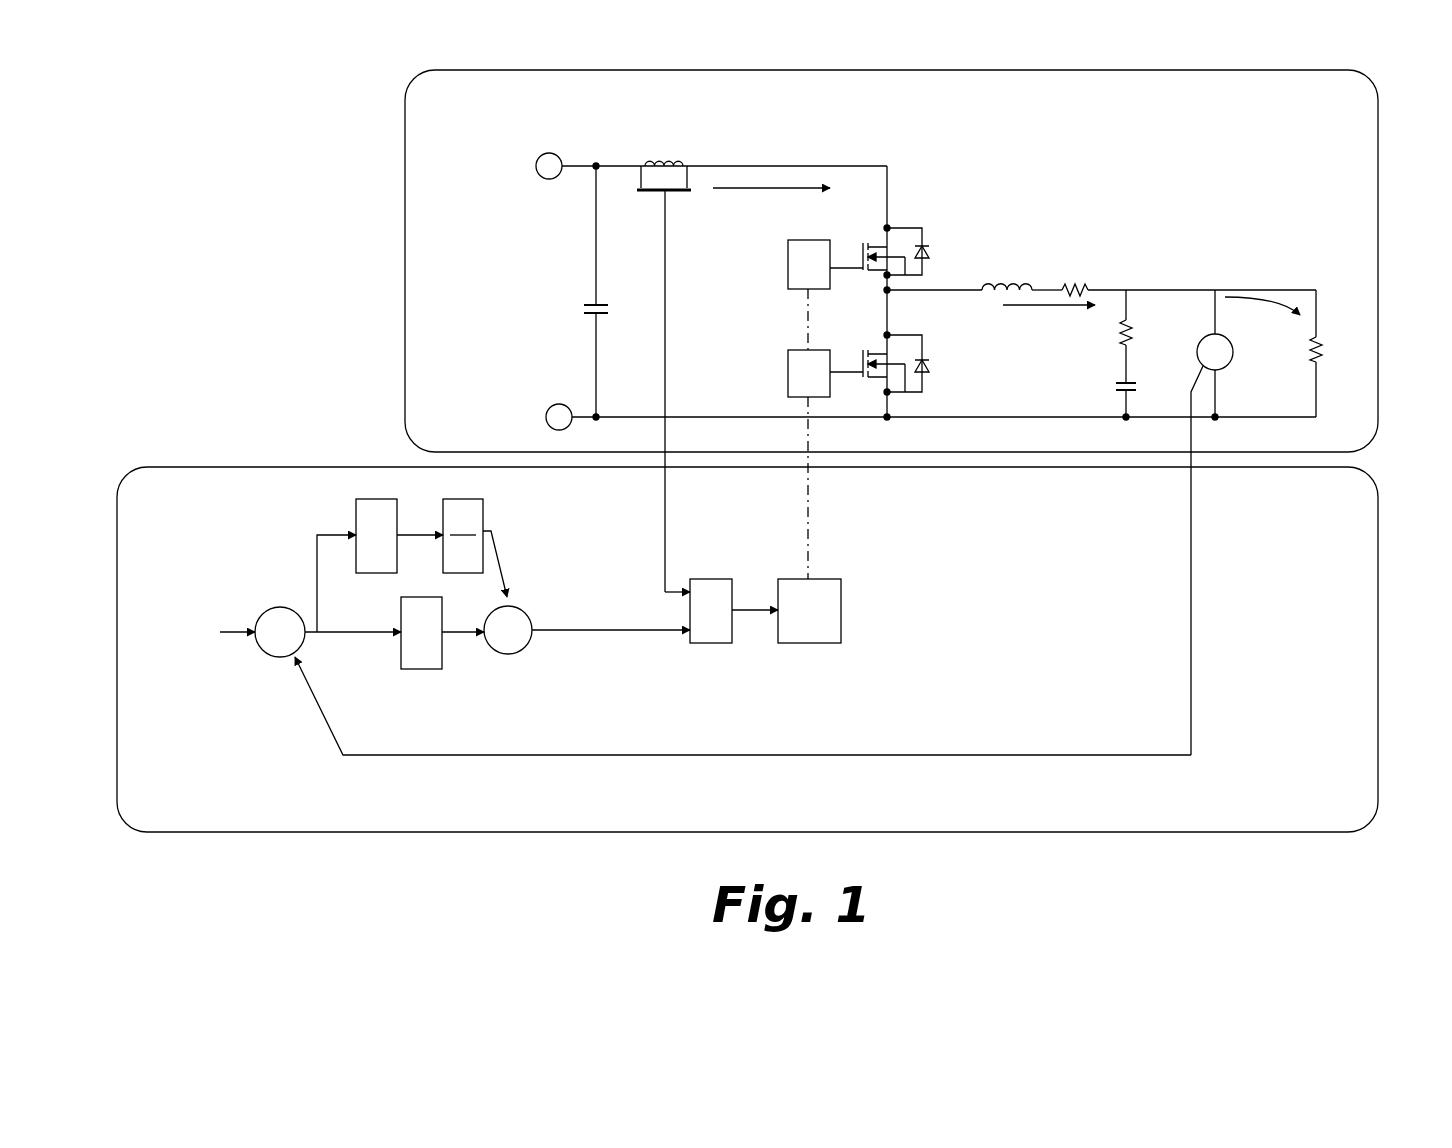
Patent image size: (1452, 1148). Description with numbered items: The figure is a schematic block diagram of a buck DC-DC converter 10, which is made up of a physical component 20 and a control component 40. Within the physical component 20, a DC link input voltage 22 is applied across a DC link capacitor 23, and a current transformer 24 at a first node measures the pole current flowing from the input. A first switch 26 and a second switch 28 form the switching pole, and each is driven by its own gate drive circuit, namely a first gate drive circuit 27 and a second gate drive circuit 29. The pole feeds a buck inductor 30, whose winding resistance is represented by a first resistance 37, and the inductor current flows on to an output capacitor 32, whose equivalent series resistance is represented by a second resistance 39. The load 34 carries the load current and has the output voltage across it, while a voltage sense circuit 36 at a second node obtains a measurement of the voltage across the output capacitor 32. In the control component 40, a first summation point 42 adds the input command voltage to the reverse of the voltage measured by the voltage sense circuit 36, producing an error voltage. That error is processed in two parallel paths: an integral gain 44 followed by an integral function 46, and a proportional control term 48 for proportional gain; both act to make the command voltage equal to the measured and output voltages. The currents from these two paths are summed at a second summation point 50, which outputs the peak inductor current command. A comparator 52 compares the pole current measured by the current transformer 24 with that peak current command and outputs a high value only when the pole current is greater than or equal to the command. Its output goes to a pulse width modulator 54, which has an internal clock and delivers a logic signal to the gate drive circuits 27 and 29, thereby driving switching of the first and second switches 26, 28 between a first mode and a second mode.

The buck DC-DC converter 10 is at (332, 107).
The physical component 20 is at (1424, 200).
The DC link input voltage 22 is at (482, 292).
The DC link capacitor 23 is at (604, 304).
The current transformer 24 is at (676, 162).
The first switch 26 is at (926, 242).
The first gate drive circuit 27 is at (788, 272).
The second switch 28 is at (926, 376).
The second gate drive circuit 29 is at (788, 368).
The buck inductor 30 is at (982, 290).
The output capacitor 32 is at (1130, 392).
The load 34 is at (1313, 366).
The voltage sense circuit 36 is at (1228, 368).
The first resistance 37 is at (1082, 288).
The second resistance 39 is at (1131, 342).
The control component 40 is at (1412, 625).
The first summation point 42 is at (258, 652).
The integral gain 44 is at (356, 516).
The integral function 46 is at (486, 522).
The proportional control term 48 is at (401, 660).
The second summation point 50 is at (528, 650).
The comparator 52 is at (715, 579).
The pulse width modulator 54 is at (830, 643).